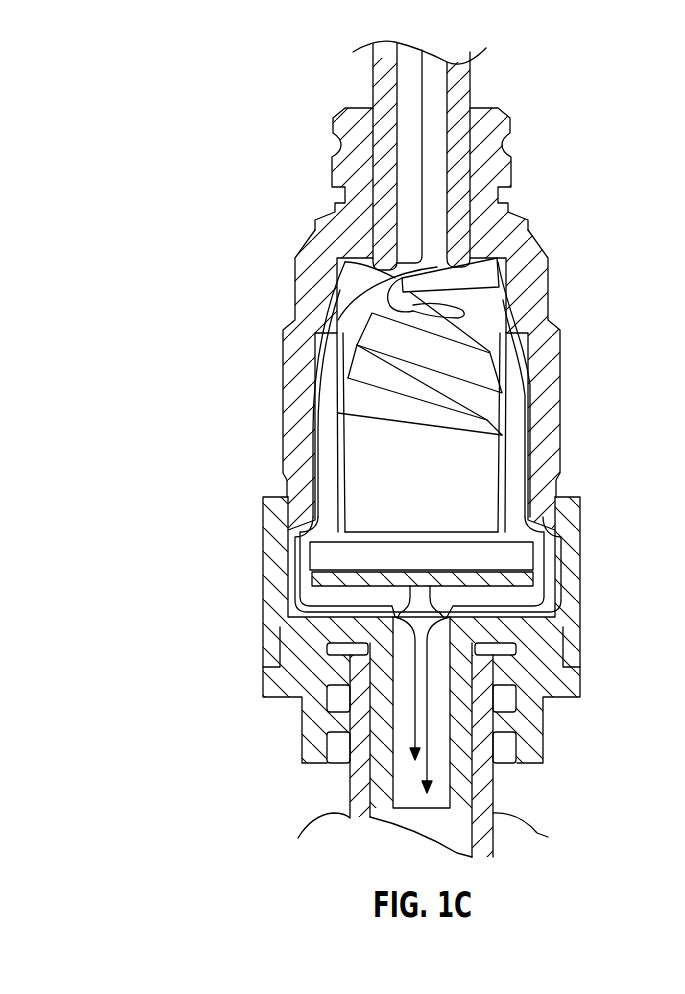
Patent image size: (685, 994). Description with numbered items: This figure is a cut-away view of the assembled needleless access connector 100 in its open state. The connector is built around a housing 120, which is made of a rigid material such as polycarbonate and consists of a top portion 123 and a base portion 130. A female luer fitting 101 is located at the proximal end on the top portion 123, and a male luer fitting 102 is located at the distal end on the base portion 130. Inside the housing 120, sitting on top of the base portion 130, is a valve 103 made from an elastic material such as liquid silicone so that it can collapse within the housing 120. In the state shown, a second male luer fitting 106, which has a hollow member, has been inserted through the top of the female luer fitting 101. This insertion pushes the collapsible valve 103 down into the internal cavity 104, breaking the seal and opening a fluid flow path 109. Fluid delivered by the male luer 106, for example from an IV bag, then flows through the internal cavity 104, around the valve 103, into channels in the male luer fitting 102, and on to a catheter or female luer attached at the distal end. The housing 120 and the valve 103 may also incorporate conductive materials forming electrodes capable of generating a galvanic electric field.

The needleless access connector 100 is at (308, 84).
The female luer fitting 101 is at (515, 178).
The male luer fitting 102 is at (517, 747).
The valve 103 is at (483, 473).
The internal cavity 104 is at (521, 357).
The second male luer fitting 106 is at (460, 91).
The fluid flow path 109 is at (530, 415).
The housing 120 is at (300, 250).
The top portion 123 is at (538, 253).
The base portion 130 is at (543, 707).